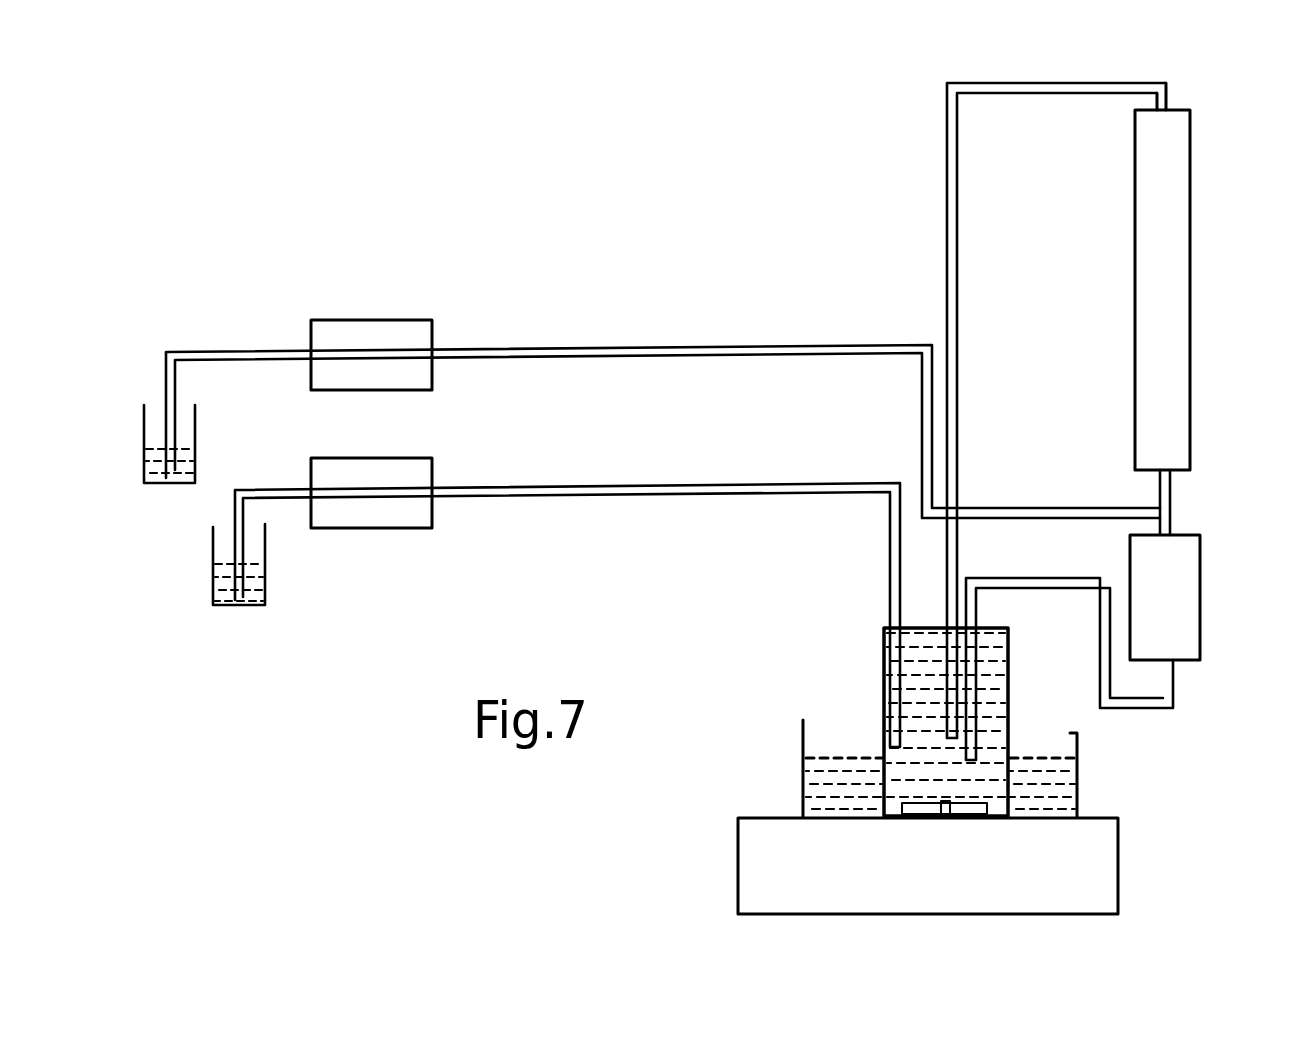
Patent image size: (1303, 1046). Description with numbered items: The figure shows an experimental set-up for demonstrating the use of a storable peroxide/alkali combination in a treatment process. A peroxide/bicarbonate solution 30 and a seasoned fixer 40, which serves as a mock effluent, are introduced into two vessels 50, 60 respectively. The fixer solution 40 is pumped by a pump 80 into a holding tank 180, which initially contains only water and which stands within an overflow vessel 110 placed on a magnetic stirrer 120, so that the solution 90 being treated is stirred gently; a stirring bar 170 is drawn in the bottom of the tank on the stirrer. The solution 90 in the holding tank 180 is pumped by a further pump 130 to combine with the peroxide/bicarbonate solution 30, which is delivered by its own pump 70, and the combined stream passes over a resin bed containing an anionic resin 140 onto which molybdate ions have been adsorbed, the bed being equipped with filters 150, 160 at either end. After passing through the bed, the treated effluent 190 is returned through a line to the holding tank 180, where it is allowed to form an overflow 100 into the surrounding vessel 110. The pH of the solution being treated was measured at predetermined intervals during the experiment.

The peroxide/bicarbonate solution 30 is at (190, 457).
The seasoned fixer 40 is at (265, 587).
The vessel 50 is at (157, 484).
The vessel 60 is at (227, 606).
The pump 70 is at (368, 321).
The pump 80 is at (387, 529).
The solution being treated 90 is at (922, 773).
The overflow 100 is at (823, 780).
The overflow vessel 110 is at (803, 795).
The magnetic stirrer 120 is at (748, 867).
The pump 130 is at (1185, 633).
The anionic resin 140 is at (1168, 305).
The filter 150 is at (1158, 473).
The filter 160 is at (1160, 111).
The stirring bar 170 is at (1012, 808).
The holding tank 180 is at (1007, 720).
The treated effluent 190 is at (951, 420).